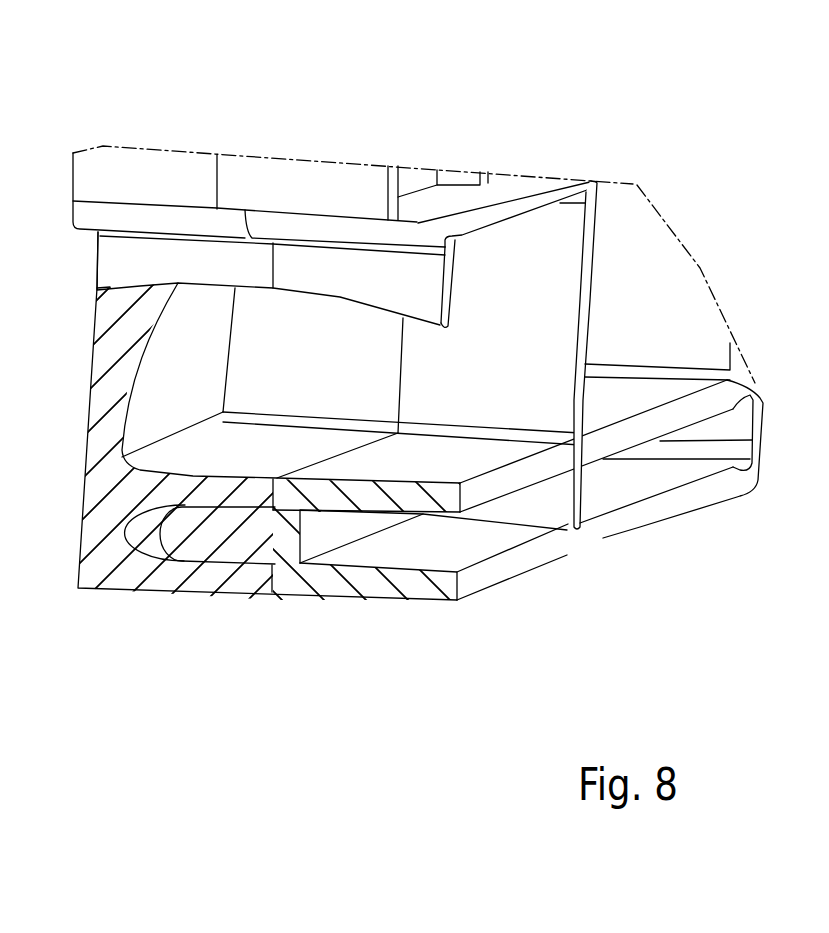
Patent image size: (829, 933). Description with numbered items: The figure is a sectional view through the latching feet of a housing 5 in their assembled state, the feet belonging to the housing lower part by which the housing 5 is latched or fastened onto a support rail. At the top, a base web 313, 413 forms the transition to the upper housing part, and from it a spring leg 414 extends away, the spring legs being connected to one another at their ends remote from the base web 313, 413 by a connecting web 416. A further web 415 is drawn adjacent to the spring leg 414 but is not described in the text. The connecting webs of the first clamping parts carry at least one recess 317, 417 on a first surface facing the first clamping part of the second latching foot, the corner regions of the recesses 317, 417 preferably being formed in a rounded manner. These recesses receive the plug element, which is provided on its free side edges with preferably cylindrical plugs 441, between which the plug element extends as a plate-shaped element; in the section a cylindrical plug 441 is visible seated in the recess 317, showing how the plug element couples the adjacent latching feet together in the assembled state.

The housing 5 is at (283, 185).
The base web 313 is at (140, 213).
The recess 317 is at (147, 530).
The base web 413 is at (520, 190).
The spring leg 414 is at (650, 288).
The web 415 is at (560, 247).
The connecting web 416 is at (583, 532).
The recess 417 is at (460, 555).
The cylindrical plug 441 is at (210, 545).